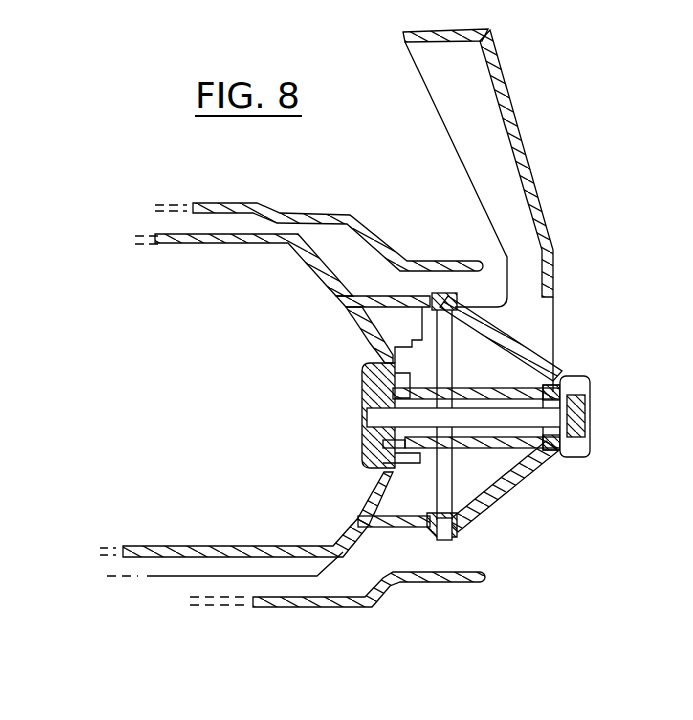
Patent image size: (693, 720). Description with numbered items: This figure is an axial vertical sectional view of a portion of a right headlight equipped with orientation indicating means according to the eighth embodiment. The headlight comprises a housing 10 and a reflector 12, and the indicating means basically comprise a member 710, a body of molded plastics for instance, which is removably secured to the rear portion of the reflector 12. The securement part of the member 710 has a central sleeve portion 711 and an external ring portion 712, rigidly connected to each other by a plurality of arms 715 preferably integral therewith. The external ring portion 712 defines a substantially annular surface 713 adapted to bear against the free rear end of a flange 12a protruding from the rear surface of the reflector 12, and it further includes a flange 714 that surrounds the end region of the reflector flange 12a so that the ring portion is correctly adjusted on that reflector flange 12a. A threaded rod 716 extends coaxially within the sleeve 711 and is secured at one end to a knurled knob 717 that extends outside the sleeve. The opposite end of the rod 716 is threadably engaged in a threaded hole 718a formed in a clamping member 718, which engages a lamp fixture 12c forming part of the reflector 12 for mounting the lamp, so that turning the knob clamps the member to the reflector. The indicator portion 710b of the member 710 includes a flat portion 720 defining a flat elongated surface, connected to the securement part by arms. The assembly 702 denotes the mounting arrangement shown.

The housing 10 is at (304, 205).
The reflector 12 is at (342, 537).
The flange 12a is at (386, 528).
The lamp fixture 12c is at (400, 343).
The mounting assembly 702 is at (492, 485).
The member 710 is at (564, 264).
The second portion 710b is at (504, 84).
The central sleeve portion 711 is at (506, 452).
The external ring portion 712 is at (447, 292).
The annular surface 713 is at (458, 538).
The flange 714 is at (432, 538).
The arms 715 is at (524, 366).
The threaded rod 716 is at (522, 413).
The knurled knob 717 is at (595, 440).
The clamping member 718 is at (363, 382).
The threaded hole 718a is at (363, 432).
The flat portion 720 is at (447, 30).